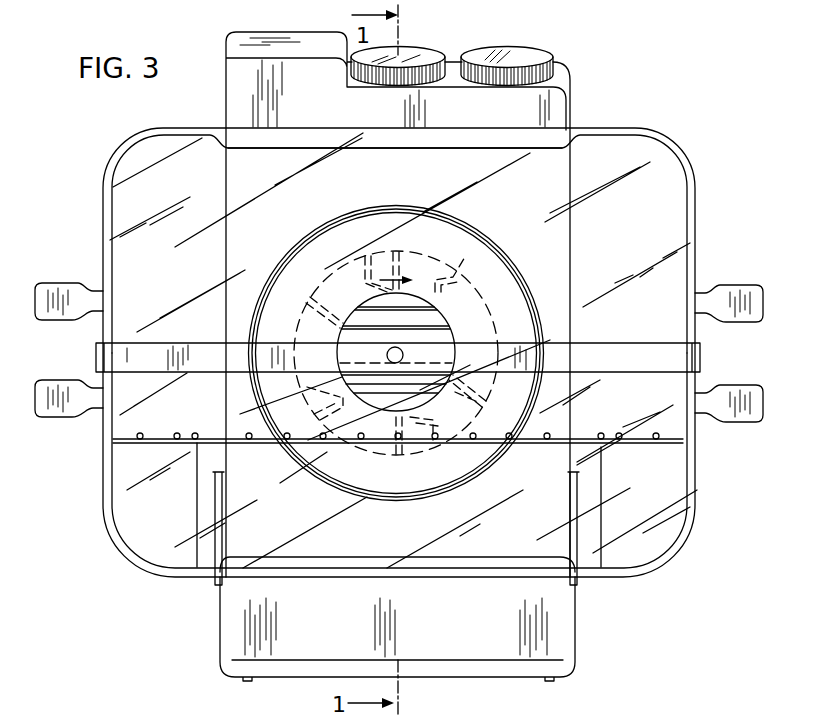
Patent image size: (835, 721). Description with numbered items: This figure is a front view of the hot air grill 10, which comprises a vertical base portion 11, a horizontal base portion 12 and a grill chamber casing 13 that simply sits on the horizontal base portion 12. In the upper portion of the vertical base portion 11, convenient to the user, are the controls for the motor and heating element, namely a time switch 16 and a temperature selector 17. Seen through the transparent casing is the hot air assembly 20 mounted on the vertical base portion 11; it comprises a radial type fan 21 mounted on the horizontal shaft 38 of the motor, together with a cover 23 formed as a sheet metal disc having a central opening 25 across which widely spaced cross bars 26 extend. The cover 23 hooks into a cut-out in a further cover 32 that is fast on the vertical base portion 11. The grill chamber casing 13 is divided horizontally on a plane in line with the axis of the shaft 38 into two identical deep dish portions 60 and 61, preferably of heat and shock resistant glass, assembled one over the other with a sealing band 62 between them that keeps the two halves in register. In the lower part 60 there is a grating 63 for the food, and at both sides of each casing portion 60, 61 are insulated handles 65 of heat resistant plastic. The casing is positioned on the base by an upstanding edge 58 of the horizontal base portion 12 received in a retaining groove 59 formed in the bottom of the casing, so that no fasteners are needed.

The hot air grill 10 is at (611, 85).
The vertical base portion 11 is at (225, 42).
The horizontal base portion 12 is at (578, 669).
The grill chamber casing 13 is at (680, 144).
The time switch 16 is at (404, 56).
The temperature selector 17 is at (528, 55).
The hot air assembly 20 is at (496, 244).
The radial type fan 21 is at (322, 282).
The cover 23 is at (371, 228).
The central opening 25 is at (432, 280).
The cross bars 26 is at (367, 300).
The further cover 32 is at (522, 290).
The horizontal shaft 38 is at (338, 343).
The upstanding edge 58 is at (333, 572).
The retaining groove 59 is at (274, 152).
The lower casing half 60 is at (105, 230).
The upper casing half 61 is at (105, 480).
The sealing band 62 is at (97, 357).
The grating 63 is at (168, 443).
The insulated handles 65 is at (46, 291).